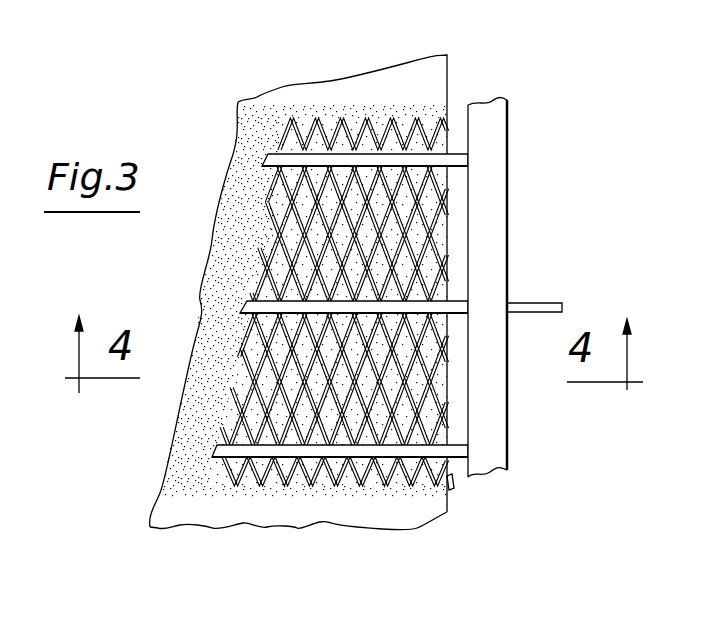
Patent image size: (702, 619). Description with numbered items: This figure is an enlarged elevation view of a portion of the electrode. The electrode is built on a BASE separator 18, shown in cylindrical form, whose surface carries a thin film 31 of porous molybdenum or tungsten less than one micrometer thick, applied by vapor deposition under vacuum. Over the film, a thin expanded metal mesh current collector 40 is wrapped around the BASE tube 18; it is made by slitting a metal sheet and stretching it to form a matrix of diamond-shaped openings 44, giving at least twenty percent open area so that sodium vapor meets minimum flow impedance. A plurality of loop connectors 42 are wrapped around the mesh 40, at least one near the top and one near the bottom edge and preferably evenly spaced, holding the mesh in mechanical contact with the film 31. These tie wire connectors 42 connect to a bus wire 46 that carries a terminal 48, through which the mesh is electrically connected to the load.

The BASE separator 18 is at (353, 90).
The thin film 31 is at (250, 140).
The expanded metal mesh current collector 40 is at (448, 481).
The loop connectors 42 is at (240, 450).
The diamond-shaped openings 44 is at (330, 415).
The bus wire 46 is at (494, 167).
The terminal 48 is at (547, 306).